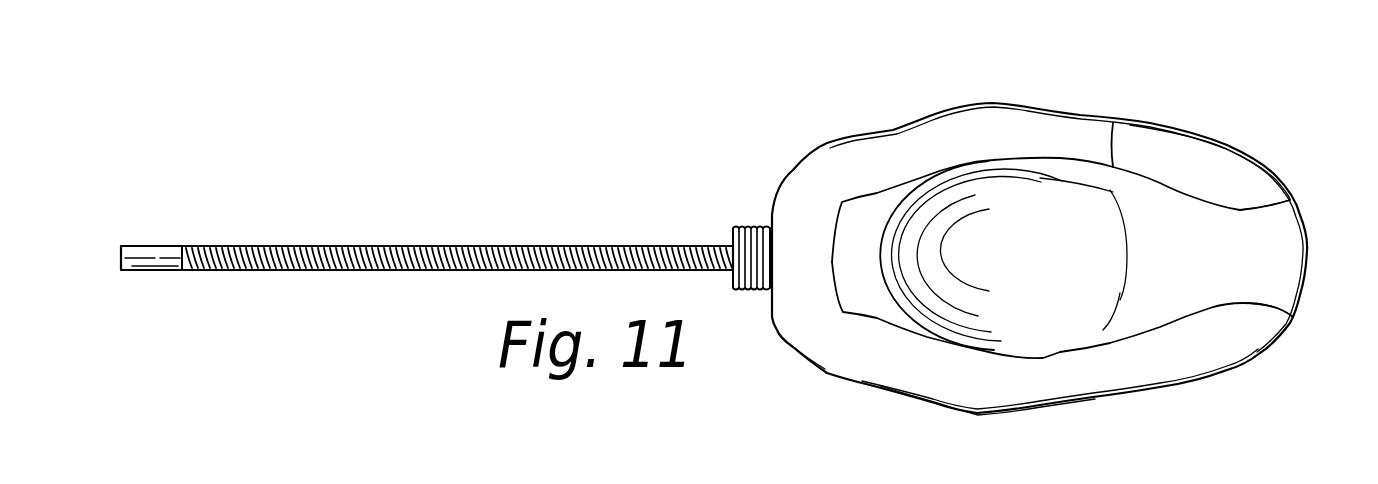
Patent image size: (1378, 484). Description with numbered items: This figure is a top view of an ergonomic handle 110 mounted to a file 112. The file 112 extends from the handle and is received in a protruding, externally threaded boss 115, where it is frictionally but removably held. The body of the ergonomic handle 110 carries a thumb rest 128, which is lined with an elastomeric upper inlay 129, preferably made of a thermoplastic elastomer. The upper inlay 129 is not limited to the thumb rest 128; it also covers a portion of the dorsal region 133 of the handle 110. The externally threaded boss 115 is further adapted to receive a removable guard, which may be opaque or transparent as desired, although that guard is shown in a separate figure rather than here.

The ergonomic handle 110 is at (853, 104).
The file 112 is at (398, 263).
The externally threaded boss 115 is at (745, 228).
The thumb rest 128 is at (1038, 268).
The upper inlay 129 is at (1133, 122).
The dorsal region 133 is at (1245, 258).